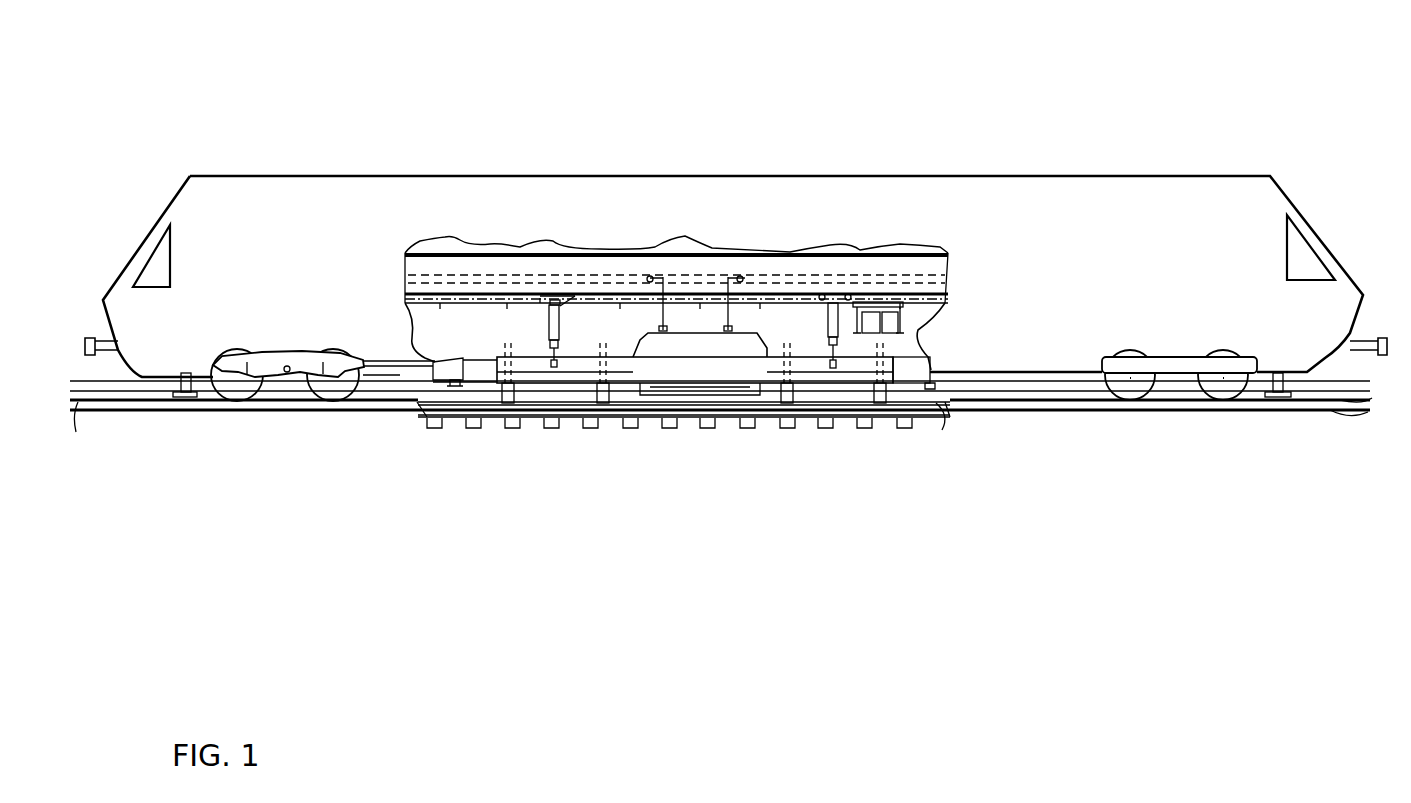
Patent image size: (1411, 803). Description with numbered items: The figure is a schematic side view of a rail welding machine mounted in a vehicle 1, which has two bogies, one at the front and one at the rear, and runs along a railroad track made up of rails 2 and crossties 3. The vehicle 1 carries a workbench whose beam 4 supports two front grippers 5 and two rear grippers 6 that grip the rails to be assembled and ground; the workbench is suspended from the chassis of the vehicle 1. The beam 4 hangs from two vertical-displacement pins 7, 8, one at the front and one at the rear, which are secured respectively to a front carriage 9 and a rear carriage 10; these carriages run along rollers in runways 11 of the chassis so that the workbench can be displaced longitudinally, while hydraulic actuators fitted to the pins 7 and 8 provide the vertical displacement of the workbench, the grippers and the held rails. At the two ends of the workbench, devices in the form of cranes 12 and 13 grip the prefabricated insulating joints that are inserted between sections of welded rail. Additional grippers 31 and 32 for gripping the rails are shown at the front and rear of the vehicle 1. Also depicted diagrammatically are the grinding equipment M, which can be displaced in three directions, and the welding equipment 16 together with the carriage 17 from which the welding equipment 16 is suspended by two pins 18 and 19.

The vehicle 1 is at (217, 223).
The rail 2 is at (450, 410).
The crossties 3 is at (590, 423).
The beam 4 is at (578, 372).
The front grippers 5 is at (503, 407).
The rear grippers 6 is at (787, 345).
The vertical-displacement pin 7 is at (546, 332).
The vertical-displacement pin 8 is at (823, 332).
The front carriage 9 is at (558, 300).
The rear carriage 10 is at (824, 292).
The runways 11 is at (430, 290).
The crane 12 is at (430, 362).
The crane 13 is at (900, 372).
The welding equipment 16 is at (718, 353).
The carriage 17 is at (673, 283).
The pin 18 is at (663, 314).
The pin 19 is at (728, 317).
The grinding equipment M is at (867, 308).
The gripper 31 is at (188, 408).
The gripper 32 is at (1278, 397).